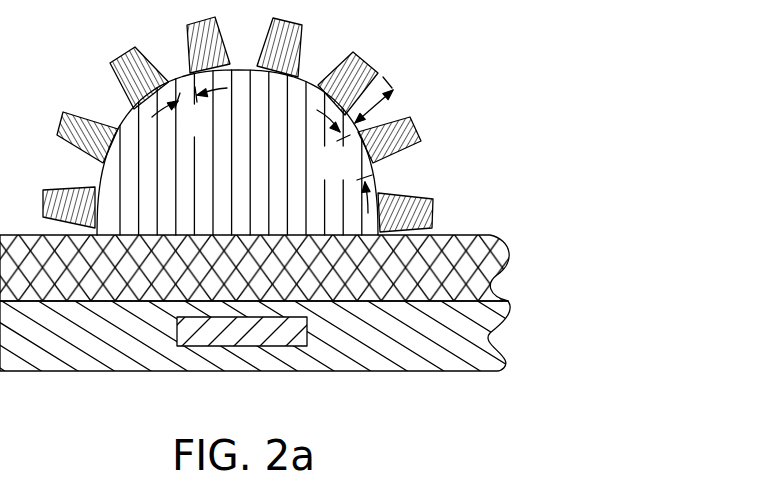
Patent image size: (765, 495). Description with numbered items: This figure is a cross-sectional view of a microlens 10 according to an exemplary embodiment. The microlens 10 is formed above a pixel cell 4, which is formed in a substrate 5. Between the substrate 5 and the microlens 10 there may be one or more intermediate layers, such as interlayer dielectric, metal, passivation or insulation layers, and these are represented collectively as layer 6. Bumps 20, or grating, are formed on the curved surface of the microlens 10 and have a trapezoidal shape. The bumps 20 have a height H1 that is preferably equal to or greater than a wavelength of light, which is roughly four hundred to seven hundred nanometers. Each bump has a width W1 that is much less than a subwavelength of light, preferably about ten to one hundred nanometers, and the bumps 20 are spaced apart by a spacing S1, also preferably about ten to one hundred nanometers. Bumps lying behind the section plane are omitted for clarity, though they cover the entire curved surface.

The microlens 10 is at (366, 174).
The bumps 20 is at (435, 203).
The layer 6 is at (488, 270).
The substrate 5 is at (486, 344).
The pixel cell 4 is at (258, 346).
The spacing S1 is at (189, 112).
The width W1 is at (344, 161).
The height H1 is at (387, 82).